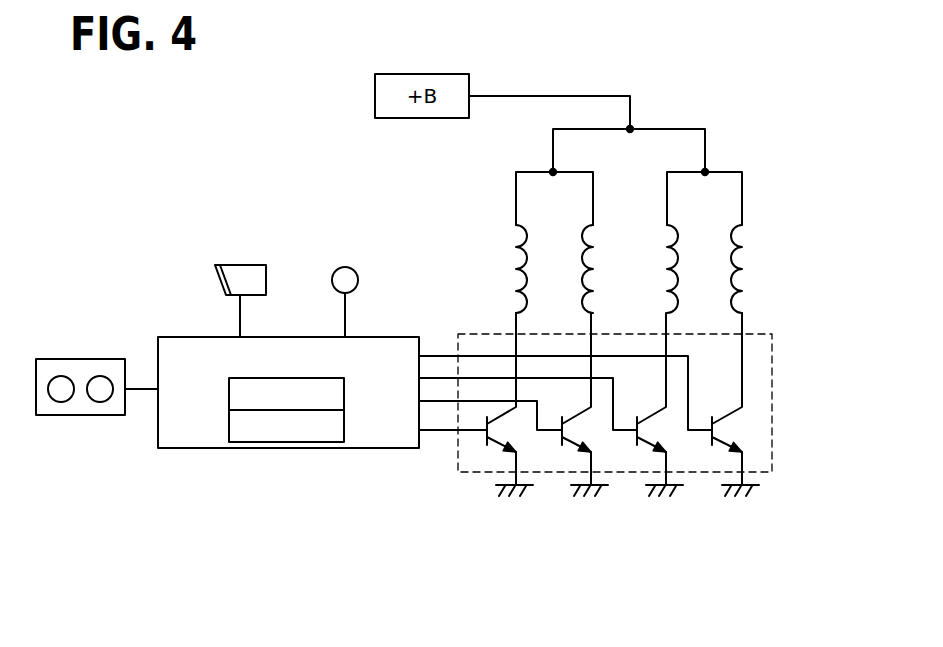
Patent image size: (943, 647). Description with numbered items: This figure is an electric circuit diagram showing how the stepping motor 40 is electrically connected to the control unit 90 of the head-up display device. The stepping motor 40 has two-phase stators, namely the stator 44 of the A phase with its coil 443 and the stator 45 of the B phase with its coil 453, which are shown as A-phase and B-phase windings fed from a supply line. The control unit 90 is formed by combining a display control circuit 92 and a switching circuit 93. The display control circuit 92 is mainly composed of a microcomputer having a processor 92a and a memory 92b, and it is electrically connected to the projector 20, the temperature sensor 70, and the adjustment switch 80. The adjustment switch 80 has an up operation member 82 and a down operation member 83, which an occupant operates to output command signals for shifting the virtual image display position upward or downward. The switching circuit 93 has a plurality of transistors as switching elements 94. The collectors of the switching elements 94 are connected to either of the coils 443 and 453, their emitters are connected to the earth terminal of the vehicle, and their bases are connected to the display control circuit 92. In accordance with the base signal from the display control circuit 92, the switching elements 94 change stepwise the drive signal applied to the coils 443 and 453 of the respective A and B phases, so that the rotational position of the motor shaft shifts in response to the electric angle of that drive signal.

The projector 20 is at (242, 265).
The stepping motor 40 is at (625, 224).
The stator 44 is at (498, 269).
The coil 443 is at (582, 280).
The stator 45 is at (757, 269).
The coil 453 is at (668, 312).
The temperature sensor 70 is at (345, 267).
The adjustment switch 80 is at (97, 403).
The up operation member 82 is at (62, 376).
The down operation member 83 is at (100, 376).
The control unit 90 is at (465, 462).
The display control circuit 92 is at (435, 453).
The processor 92a is at (344, 392).
The memory 92b is at (344, 428).
The switching circuit 93 is at (581, 441).
The switching element 94 is at (486, 447).